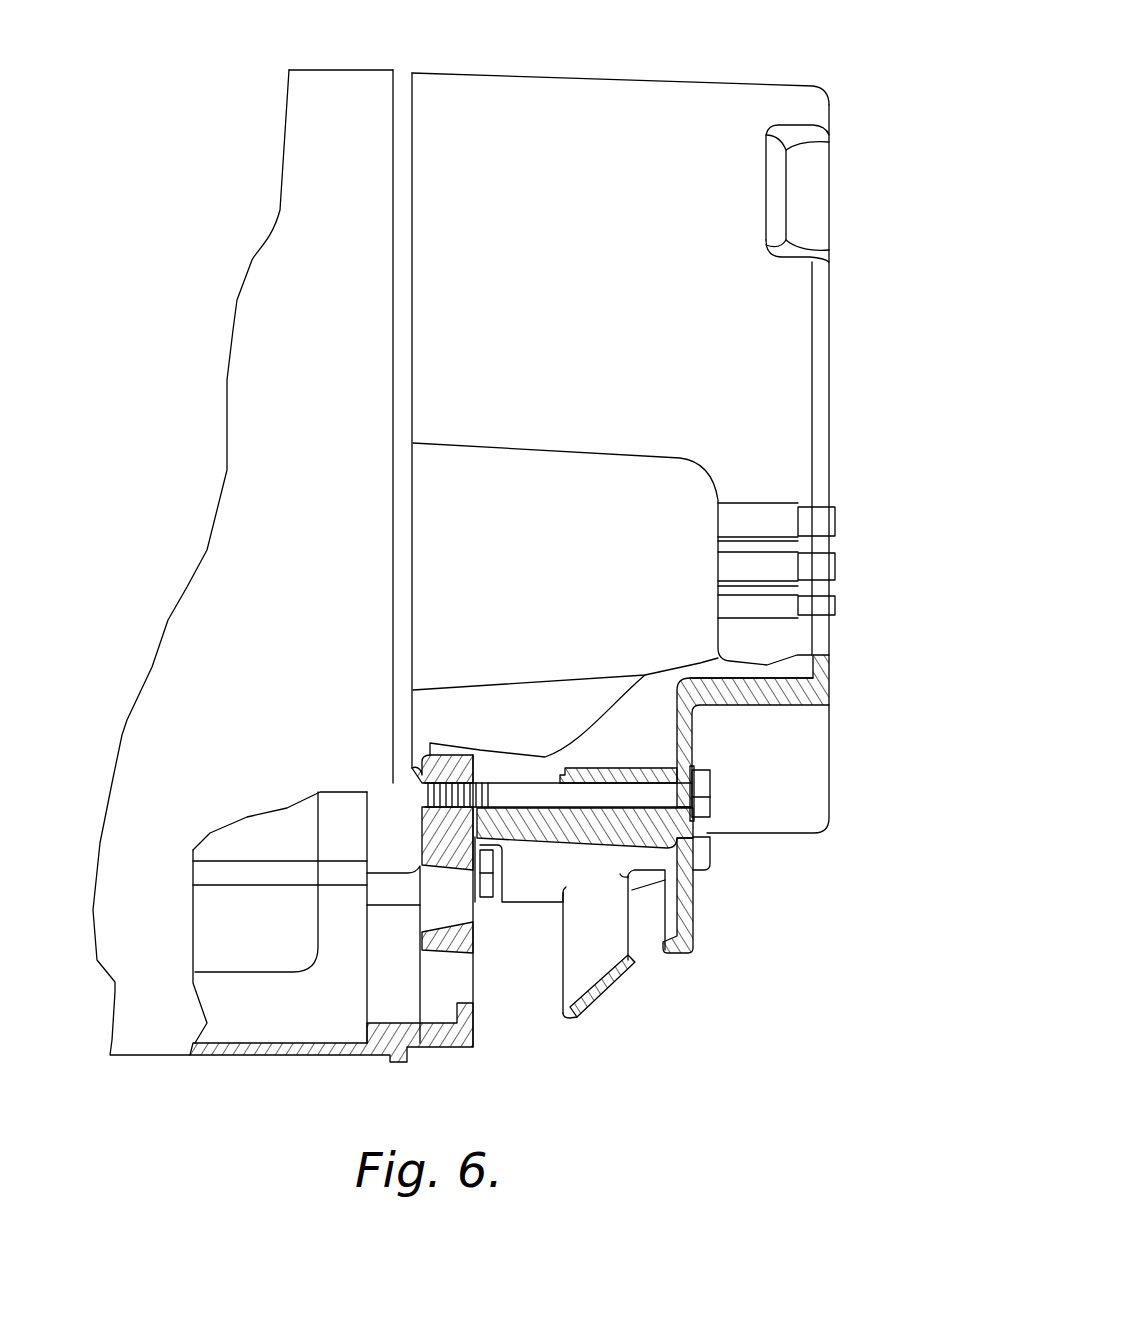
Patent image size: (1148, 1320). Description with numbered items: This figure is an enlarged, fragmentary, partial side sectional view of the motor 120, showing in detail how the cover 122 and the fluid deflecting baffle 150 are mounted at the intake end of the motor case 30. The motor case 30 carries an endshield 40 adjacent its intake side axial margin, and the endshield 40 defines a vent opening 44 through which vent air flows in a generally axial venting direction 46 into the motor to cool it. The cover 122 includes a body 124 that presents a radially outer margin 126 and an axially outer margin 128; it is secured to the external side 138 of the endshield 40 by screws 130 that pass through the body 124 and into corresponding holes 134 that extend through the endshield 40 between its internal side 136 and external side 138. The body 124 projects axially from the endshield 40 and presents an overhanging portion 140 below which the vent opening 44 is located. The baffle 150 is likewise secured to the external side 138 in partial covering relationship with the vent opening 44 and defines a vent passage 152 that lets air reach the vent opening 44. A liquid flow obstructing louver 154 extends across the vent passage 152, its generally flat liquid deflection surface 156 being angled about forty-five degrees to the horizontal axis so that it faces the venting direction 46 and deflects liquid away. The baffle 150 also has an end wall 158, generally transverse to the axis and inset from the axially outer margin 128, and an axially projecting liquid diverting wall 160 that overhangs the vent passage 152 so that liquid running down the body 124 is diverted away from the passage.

The motor case 30 is at (255, 448).
The endshield 40 is at (413, 1040).
The vent opening 44 is at (455, 974).
The axial venting direction 46 is at (755, 931).
The motor 120 is at (235, 176).
The cover 122 is at (687, 63).
The body 124 is at (778, 300).
The radially outer margin 126 is at (557, 95).
The axially outer margin 128 is at (835, 388).
The screw 130 is at (705, 787).
The hole 134 is at (415, 798).
The internal side 136 is at (420, 938).
The external side 138 is at (473, 937).
The overhanging portion 140 is at (797, 711).
The fluid deflecting baffle 150 is at (724, 1001).
The vent passage 152 is at (636, 943).
The liquid flow obstructing louver 154 is at (575, 1012).
The liquid deflection surface 156 is at (605, 984).
The end wall 158 is at (683, 736).
The liquid diverting wall 160 is at (703, 836).